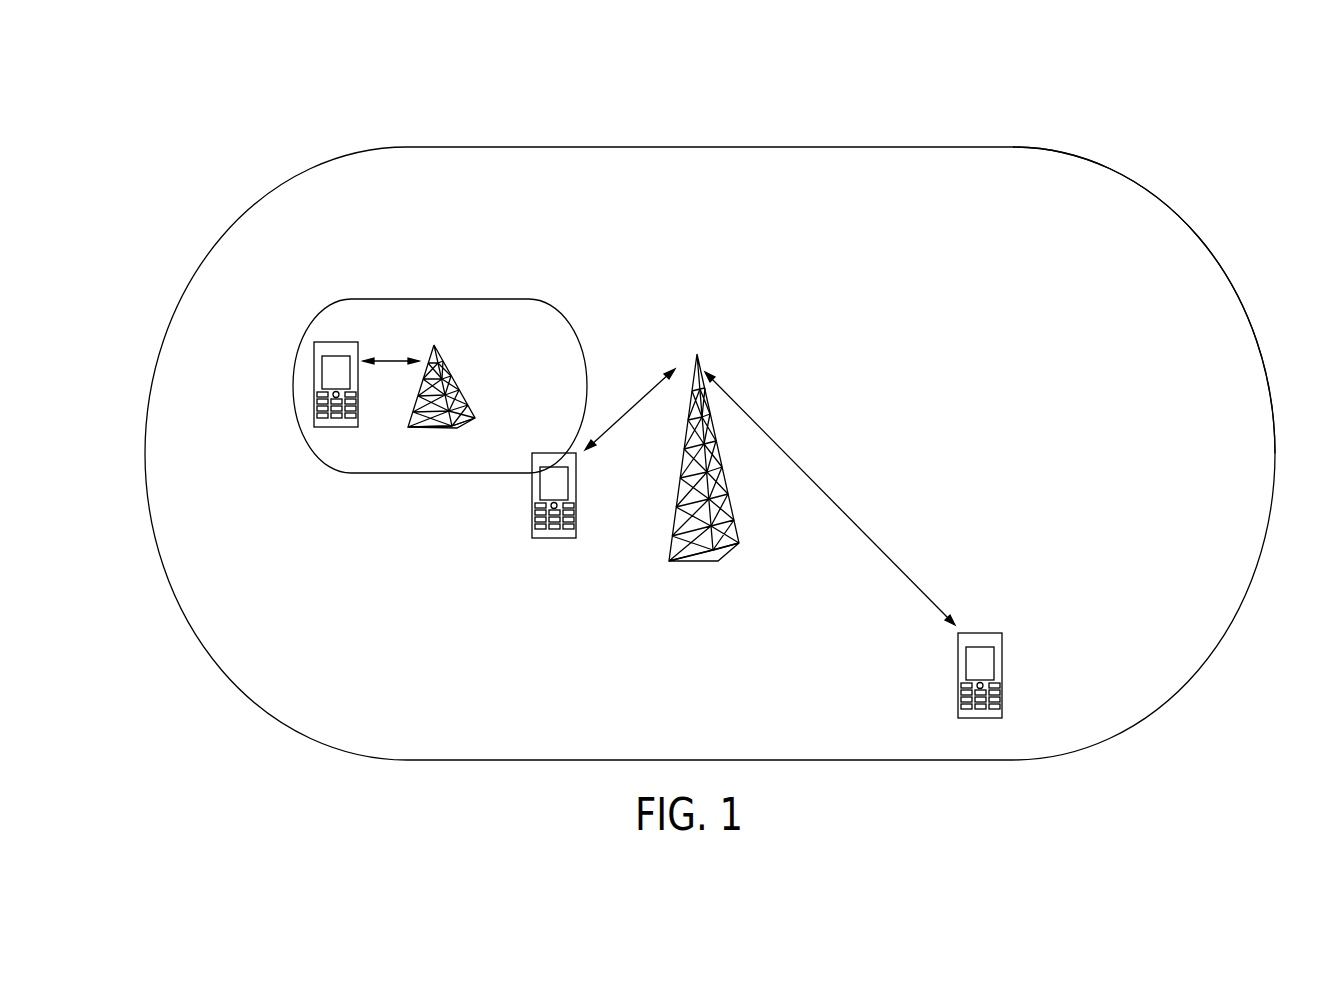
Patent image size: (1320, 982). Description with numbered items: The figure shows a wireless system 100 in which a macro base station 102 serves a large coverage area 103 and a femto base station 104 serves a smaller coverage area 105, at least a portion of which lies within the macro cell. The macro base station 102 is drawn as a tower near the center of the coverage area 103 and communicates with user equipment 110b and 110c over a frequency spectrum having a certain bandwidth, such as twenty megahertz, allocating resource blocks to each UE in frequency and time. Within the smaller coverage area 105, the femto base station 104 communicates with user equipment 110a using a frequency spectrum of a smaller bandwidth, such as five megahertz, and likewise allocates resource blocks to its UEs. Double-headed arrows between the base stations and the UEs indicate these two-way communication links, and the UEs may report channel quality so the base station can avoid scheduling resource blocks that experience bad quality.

The system 100 is at (230, 111).
The macro base station 102 is at (729, 490).
The coverage area 103 is at (848, 147).
The femto base station 104 is at (445, 385).
The coverage area 105 is at (430, 299).
The user equipment 110a is at (330, 342).
The user equipment 110b is at (532, 510).
The user equipment 110c is at (958, 668).